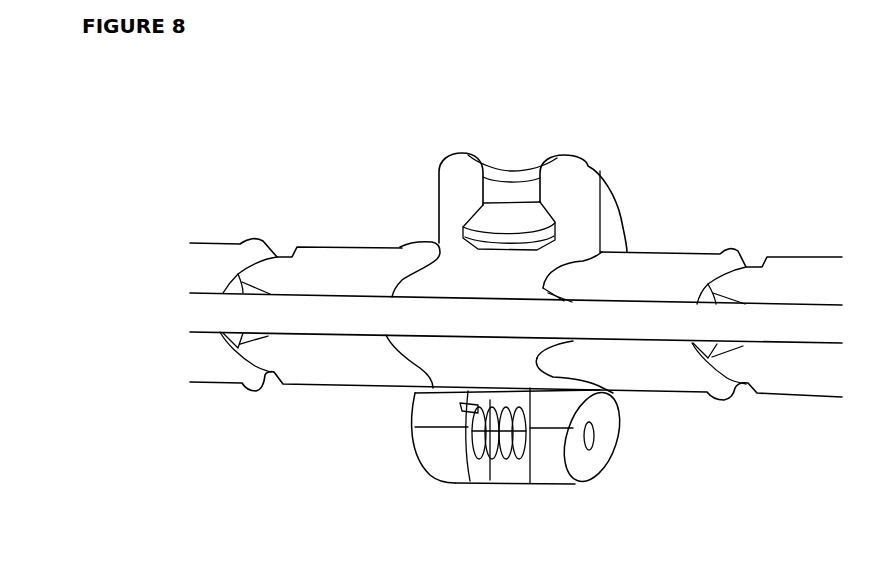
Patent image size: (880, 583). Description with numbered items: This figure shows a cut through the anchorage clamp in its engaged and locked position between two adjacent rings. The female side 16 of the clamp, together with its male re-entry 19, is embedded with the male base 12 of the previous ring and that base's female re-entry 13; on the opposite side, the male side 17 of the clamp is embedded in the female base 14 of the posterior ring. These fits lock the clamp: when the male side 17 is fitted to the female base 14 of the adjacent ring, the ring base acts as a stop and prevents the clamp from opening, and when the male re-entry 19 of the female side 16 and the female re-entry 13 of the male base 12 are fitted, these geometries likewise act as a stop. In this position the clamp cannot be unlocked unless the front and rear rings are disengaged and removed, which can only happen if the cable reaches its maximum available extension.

The male base 12 is at (560, 360).
The female re-entry 13 is at (567, 284).
The female base 14 is at (393, 358).
The female side 16 is at (552, 257).
The male side 17 is at (422, 277).
The male re-entry 19 is at (545, 290).